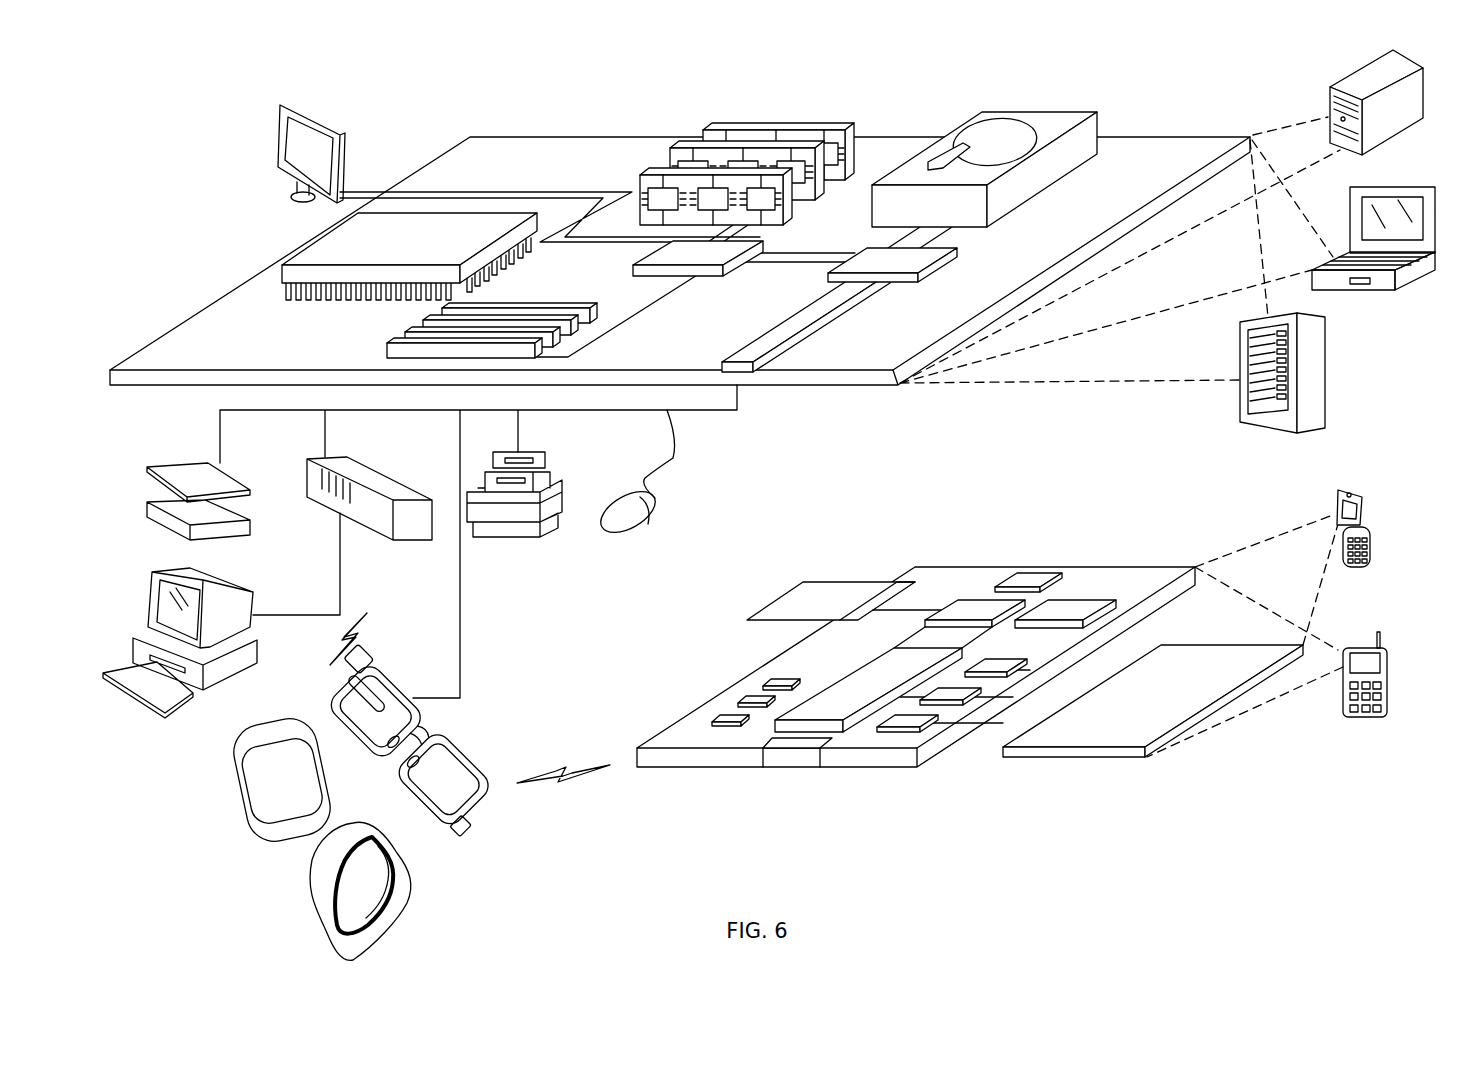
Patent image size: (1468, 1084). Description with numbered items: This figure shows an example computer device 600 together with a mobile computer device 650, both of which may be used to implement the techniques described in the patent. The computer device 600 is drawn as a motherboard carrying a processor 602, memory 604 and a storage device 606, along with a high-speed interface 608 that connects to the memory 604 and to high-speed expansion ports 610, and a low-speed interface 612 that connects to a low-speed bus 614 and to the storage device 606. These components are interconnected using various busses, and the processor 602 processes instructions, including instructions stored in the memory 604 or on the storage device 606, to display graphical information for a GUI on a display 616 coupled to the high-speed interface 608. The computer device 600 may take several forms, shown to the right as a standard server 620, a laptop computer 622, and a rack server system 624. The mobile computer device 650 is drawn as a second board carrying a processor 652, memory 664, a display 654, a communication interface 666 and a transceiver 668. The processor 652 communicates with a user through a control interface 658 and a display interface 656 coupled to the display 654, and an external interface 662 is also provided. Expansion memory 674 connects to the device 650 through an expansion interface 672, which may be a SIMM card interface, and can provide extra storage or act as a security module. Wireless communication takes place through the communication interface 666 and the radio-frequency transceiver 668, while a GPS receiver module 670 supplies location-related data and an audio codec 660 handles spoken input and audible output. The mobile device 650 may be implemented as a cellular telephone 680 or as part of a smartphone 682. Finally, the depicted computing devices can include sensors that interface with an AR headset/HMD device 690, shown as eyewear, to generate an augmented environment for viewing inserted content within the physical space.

The computer device 600 is at (420, 78).
The processor 602 is at (307, 243).
The memory 604 is at (782, 130).
The storage device 606 is at (1033, 113).
The high-speed interface 608 is at (712, 252).
The high-speed expansion ports 610 is at (415, 325).
The low-speed interface 612 is at (865, 255).
The low-speed bus 614 is at (743, 350).
The display 616 is at (287, 103).
The standard server 620 is at (1353, 80).
The laptop computer 622 is at (1410, 188).
The rack server system 624 is at (1325, 372).
The mobile computer device 650 is at (684, 650).
The processor 652 is at (835, 693).
The display 654 is at (1193, 662).
The display interface 656 is at (917, 720).
The control interface 658 is at (958, 693).
The audio codec 660 is at (998, 657).
The external interface 662 is at (792, 748).
The memory 664 is at (743, 697).
The communication interface 666 is at (975, 600).
The transceiver 668 is at (1073, 602).
The GPS receiver module 670 is at (1032, 578).
The expansion interface 672 is at (895, 577).
The expansion memory 674 is at (807, 582).
The cellular telephone 680 is at (1350, 485).
The smartphone 682 is at (1362, 645).
The AR headset/HMD device 690 is at (464, 822).